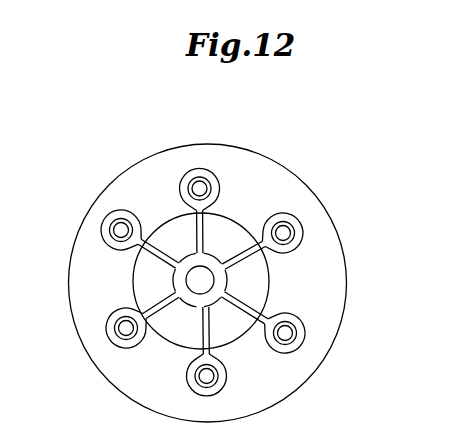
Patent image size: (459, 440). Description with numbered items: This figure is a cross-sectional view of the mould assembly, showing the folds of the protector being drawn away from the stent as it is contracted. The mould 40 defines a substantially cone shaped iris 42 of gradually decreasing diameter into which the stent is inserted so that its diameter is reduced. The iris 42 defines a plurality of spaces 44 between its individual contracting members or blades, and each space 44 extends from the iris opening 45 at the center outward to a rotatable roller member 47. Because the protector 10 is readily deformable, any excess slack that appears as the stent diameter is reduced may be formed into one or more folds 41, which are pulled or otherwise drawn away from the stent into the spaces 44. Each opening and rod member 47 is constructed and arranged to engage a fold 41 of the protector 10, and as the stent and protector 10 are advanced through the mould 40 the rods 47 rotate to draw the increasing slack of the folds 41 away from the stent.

The mould 40 is at (123, 153).
The rotatable roller member 47 is at (213, 172).
The iris opening 45 is at (235, 226).
The space 44 is at (270, 236).
The iris 42 is at (228, 274).
The fold 41 is at (212, 303).
The protector 10 is at (204, 308).